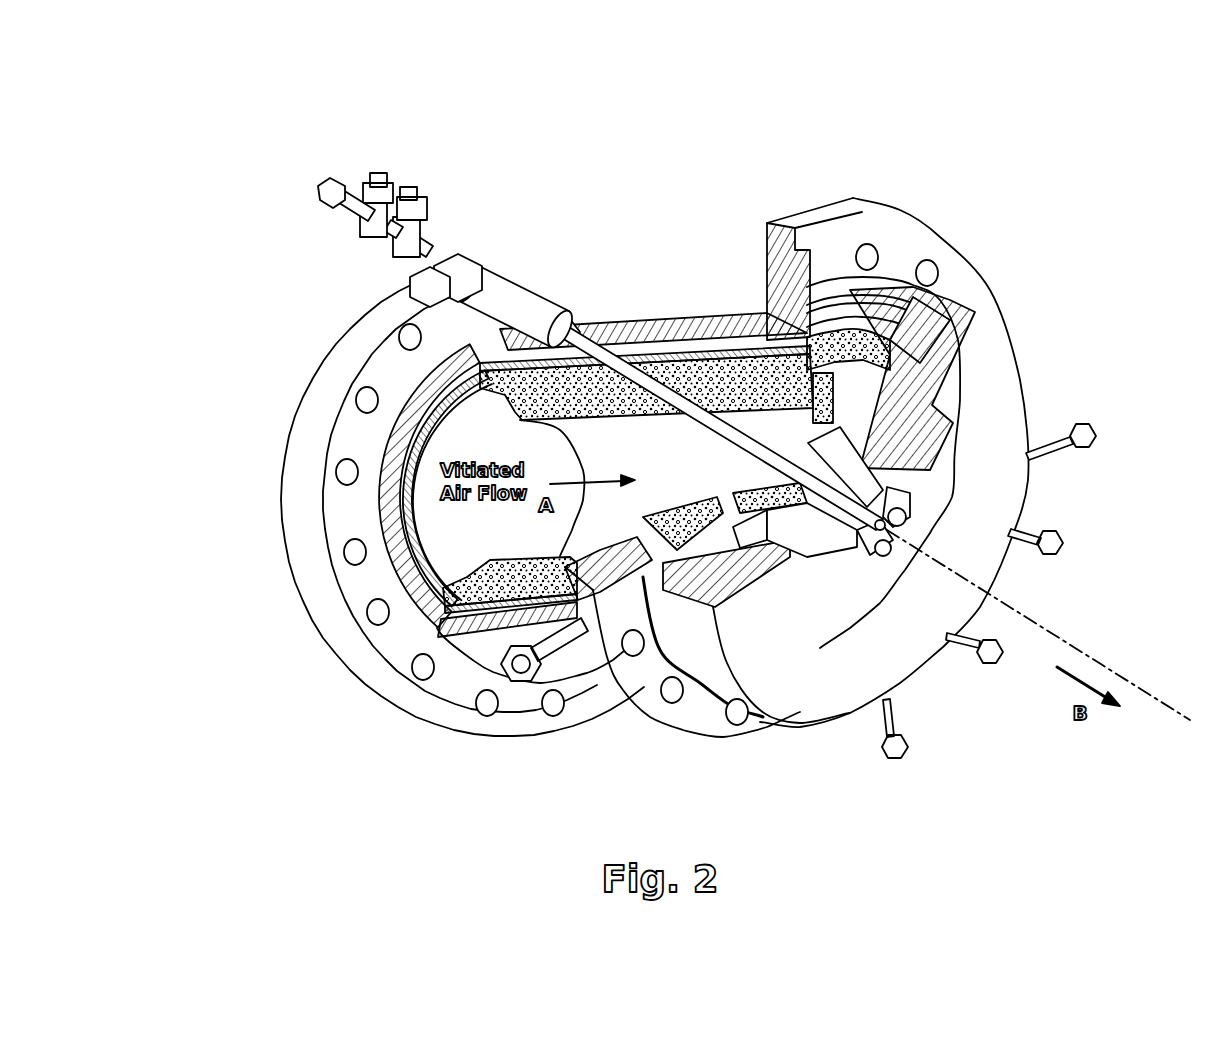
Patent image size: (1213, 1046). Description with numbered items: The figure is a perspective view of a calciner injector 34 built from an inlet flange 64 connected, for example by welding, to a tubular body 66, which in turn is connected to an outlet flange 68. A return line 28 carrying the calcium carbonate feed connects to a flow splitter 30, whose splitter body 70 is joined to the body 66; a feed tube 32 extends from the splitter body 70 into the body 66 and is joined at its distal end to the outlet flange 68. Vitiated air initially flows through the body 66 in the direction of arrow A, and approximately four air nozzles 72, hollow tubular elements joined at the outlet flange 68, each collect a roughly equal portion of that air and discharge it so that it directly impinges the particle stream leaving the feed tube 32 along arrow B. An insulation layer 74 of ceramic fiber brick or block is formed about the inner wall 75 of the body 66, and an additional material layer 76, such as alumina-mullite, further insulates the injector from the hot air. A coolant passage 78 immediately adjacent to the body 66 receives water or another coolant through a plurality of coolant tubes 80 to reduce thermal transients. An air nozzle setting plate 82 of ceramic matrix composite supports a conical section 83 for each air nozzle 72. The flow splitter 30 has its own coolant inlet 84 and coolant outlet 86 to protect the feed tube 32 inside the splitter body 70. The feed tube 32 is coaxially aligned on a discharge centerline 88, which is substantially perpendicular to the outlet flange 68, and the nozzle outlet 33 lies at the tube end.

The return line 28 is at (319, 189).
The flow splitter 30 is at (490, 270).
The feed tube 32 is at (640, 360).
The nozzle outlet 33 is at (880, 527).
The calciner injector 34 is at (913, 180).
The inlet flange 64 is at (328, 628).
The body 66 is at (698, 330).
The outlet flange 68 is at (972, 380).
The splitter body 70 is at (513, 307).
The air nozzles 72 is at (847, 557).
The insulation layer 74 is at (547, 330).
The inner wall 75 is at (717, 353).
The material layer 76 is at (553, 402).
The coolant passage 78 is at (937, 312).
The coolant tubes 80 is at (1000, 643).
The air nozzle setting plate 82 is at (747, 530).
The conical sections 83 is at (785, 530).
The coolant inlet 84 is at (407, 195).
The coolant outlet 86 is at (383, 176).
The discharge centerline 88 is at (1085, 657).